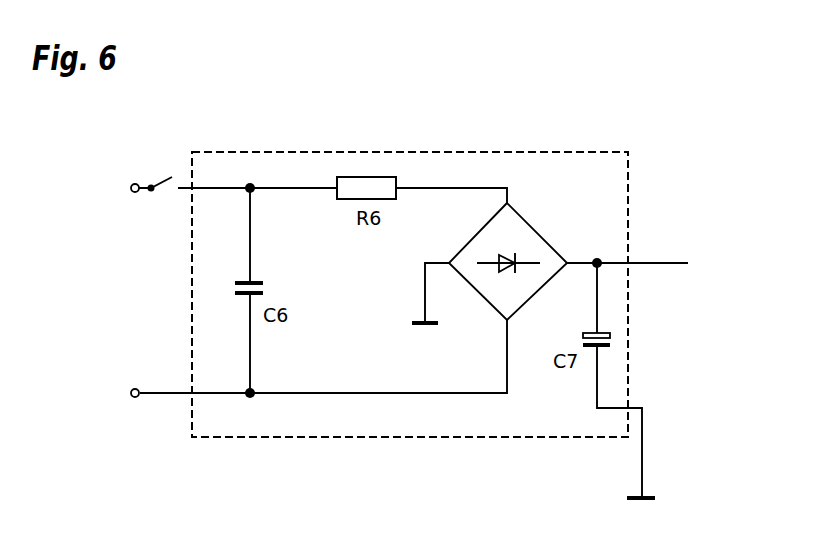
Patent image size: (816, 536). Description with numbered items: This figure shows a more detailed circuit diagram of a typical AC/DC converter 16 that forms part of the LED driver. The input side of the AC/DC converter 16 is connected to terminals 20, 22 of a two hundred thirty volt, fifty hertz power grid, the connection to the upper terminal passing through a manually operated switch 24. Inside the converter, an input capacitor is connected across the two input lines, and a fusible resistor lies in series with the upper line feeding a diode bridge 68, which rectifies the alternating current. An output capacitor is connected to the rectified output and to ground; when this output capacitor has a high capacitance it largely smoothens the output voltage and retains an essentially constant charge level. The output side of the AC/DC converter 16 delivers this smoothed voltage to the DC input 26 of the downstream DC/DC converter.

The AC/DC converter 16 is at (472, 152).
The terminal 20 is at (139, 184).
The terminal 22 is at (136, 398).
The manually operated switch 24 is at (172, 177).
The DC input 26 is at (290, 186).
The diode bridge 68 is at (533, 226).